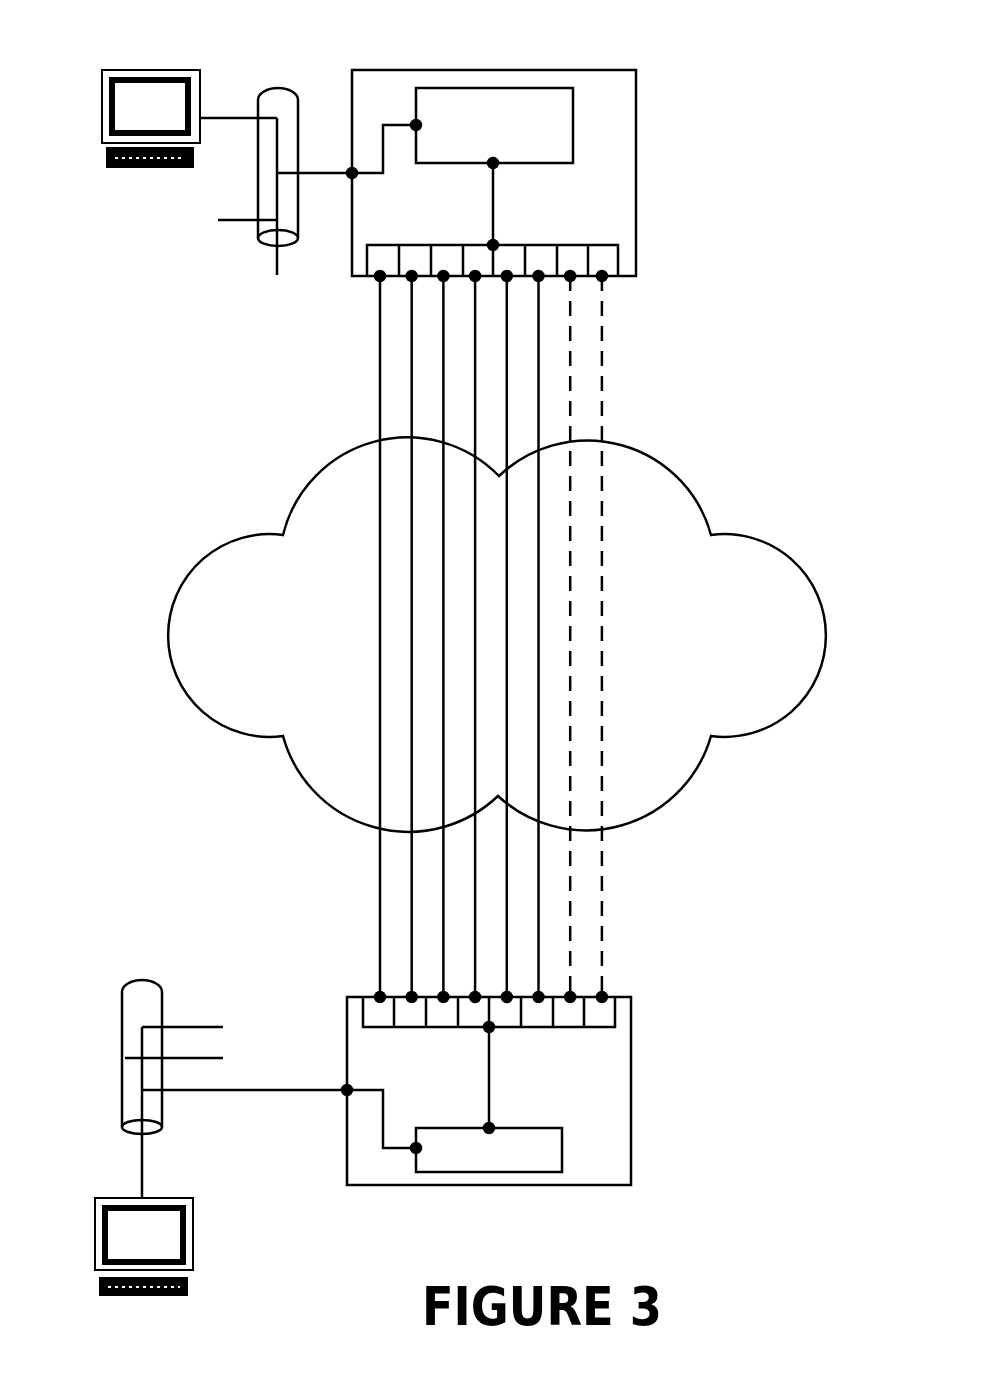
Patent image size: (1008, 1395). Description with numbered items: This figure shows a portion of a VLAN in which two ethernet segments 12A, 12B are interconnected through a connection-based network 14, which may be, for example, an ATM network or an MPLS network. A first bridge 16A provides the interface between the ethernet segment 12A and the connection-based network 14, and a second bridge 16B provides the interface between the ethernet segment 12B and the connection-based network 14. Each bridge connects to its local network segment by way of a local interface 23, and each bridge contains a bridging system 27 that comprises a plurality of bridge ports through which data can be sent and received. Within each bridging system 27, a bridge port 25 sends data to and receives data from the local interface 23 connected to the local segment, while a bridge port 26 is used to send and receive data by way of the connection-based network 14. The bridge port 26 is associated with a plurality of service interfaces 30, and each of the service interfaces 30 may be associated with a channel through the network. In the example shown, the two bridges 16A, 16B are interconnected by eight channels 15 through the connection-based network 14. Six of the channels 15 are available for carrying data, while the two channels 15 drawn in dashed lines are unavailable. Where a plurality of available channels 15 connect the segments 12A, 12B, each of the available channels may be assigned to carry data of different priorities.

The ethernet segment 12A is at (279, 90).
The ethernet segment 12B is at (141, 980).
The connection-based network 14 is at (731, 535).
The channels 15 is at (388, 420).
The bridge 16A is at (494, 70).
The bridge 16B is at (488, 1185).
The local interface 23 is at (352, 173).
The bridge port 25 is at (416, 125).
The bridge port 26 is at (493, 163).
The bridging system 27 is at (562, 128).
The service interfaces 30 is at (380, 276).